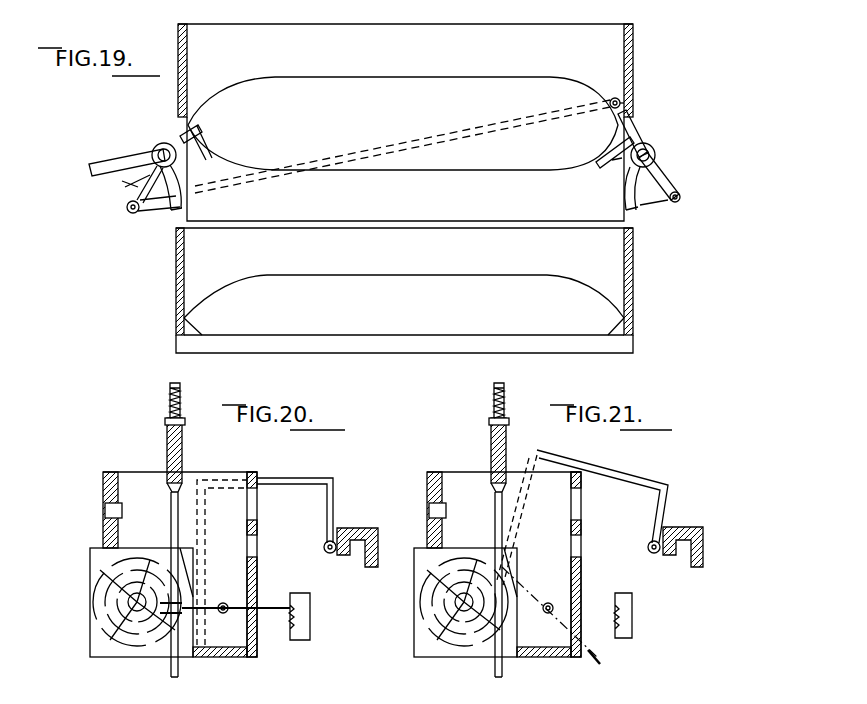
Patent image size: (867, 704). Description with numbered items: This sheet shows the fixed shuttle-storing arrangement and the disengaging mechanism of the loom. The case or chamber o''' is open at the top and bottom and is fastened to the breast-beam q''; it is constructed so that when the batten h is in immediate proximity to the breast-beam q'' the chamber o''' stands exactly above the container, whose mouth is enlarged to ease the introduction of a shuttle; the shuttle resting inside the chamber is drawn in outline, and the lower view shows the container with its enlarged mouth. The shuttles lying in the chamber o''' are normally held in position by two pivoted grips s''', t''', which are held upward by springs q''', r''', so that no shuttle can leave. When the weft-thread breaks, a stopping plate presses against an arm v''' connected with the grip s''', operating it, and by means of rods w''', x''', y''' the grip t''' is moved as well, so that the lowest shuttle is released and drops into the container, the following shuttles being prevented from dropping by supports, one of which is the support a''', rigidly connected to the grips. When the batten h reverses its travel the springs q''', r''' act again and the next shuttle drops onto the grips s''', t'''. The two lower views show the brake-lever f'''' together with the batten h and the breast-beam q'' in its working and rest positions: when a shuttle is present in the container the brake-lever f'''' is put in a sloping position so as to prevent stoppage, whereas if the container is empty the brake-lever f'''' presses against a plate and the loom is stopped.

In FIG. 19, the case or chamber o''' is at (423, 122).
In FIG. 19, the flexible bag x'''' is at (403, 135).
In FIG. 19, the lower tray p'' is at (391, 290).
In FIG. 19, the arm v''' is at (132, 157).
In FIG. 19, the rod w''' is at (153, 196).
In FIG. 19, the pivoted grip s''' is at (191, 186).
In FIG. 19, the spring q''' is at (126, 187).
In FIG. 19, the rod x''' is at (205, 138).
In FIG. 19, the rod y''' is at (641, 132).
In FIG. 19, the spring r''' is at (659, 188).
In FIG. 19, the pivoted grip t''' is at (619, 188).
In FIG. 19, the support a''' is at (611, 143).
In FIG. 20, the batten h is at (137, 613).
In FIG. 21, the batten h is at (440, 628).
In FIG. 20, the brake-lever f'''' is at (225, 621).
In FIG. 21, the brake-lever f'''' is at (558, 625).
In FIG. 20, the ratchet block a'' is at (300, 627).
In FIG. 21, the ratchet block a'' is at (638, 618).
In FIG. 20, the bent arm e''' is at (296, 503).
In FIG. 21, the bent arm e''' is at (606, 501).
In FIG. 20, the breast-beam q'' is at (357, 553).
In FIG. 21, the breast-beam q'' is at (683, 555).